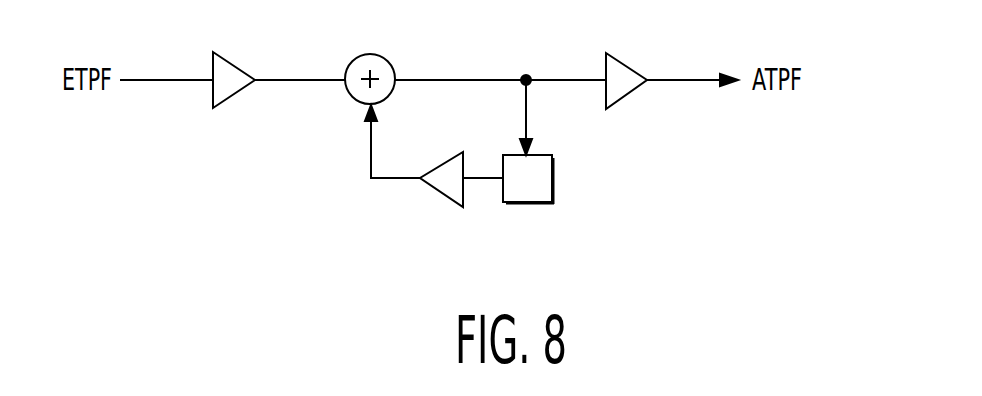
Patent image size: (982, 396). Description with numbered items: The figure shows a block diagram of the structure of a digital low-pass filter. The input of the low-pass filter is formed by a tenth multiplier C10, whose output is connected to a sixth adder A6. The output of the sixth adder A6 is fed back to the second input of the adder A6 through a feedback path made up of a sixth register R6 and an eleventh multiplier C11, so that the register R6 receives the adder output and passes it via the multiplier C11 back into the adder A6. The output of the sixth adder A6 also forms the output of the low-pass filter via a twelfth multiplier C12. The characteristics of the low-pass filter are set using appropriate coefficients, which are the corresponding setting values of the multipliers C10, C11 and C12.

The tenth multiplier C10 is at (234, 60).
The sixth adder A6 is at (370, 58).
The twelfth multiplier C12 is at (626, 61).
The eleventh multiplier C11 is at (440, 198).
The sixth register R6 is at (528, 179).